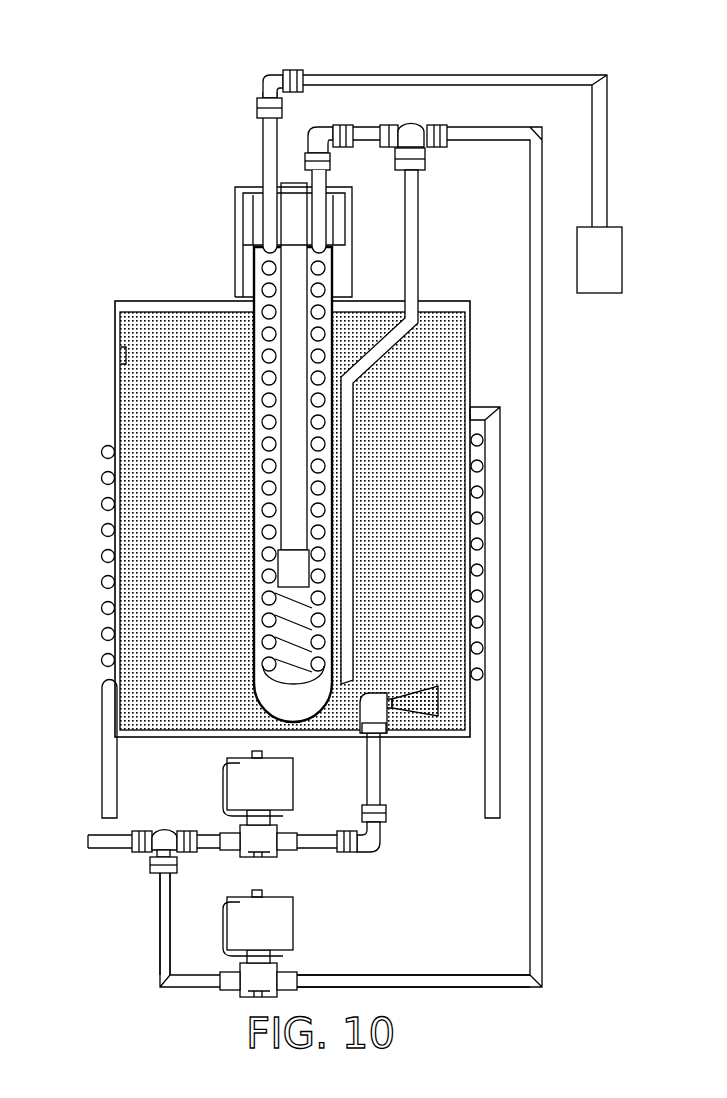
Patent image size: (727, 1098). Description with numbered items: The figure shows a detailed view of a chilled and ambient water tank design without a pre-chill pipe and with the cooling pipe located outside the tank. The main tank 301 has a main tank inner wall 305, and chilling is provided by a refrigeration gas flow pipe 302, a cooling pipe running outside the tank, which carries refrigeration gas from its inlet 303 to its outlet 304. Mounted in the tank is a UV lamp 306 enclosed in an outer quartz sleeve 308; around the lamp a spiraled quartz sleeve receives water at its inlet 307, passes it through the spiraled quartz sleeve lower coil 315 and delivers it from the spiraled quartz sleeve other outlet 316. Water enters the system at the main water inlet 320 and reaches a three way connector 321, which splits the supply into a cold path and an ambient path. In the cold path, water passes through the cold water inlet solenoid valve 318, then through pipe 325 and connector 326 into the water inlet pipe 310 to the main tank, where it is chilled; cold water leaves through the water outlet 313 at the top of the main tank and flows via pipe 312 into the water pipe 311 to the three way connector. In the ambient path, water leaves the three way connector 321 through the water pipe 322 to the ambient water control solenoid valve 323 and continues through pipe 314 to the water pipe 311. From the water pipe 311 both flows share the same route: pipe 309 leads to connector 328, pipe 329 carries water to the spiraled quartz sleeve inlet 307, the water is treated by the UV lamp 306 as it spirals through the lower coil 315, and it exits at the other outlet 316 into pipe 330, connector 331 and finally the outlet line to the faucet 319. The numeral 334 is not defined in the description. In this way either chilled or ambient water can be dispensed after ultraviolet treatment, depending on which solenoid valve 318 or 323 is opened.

The main tank 301 is at (115, 318).
The refrigeration gas flow pipe 302 is at (101, 607).
The inlet of refrigeration gas flow pipe 303 is at (102, 792).
The outlet of refrigeration gas flow pipe 304 is at (485, 804).
The main tank inner wall 305 is at (120, 372).
The UV lamp 306 is at (262, 205).
The spiraled quartz sleeve inlet 307 is at (326, 270).
The outer quartz sleeve 308 is at (252, 333).
The pipe 309 is at (362, 126).
The water inlet pipe to main tank 310 is at (367, 760).
The water pipe to 3 way connector 311 is at (408, 125).
The pipe 312 is at (418, 200).
The water outlet of cold water from the main tank 313 is at (491, 75).
The pipe between ambient water control solenoid valve and 3 way connector 314 is at (437, 975).
The spiraled quartz sleeve lower coil 315 is at (397, 716).
The spiraled quartz sleeve other outlet 316 is at (262, 268).
The cold water inlet solenoid valve 318 is at (286, 797).
The faucet 319 is at (600, 294).
The main water inlet 320 is at (105, 850).
The 3 way connector 321 is at (162, 832).
The water pipe to ambient water control solenoid valve 322 is at (160, 945).
The ambient water control solenoid valve 323 is at (294, 931).
The pipe 325 is at (328, 852).
The connector 326 is at (381, 849).
The connector 328 is at (318, 128).
The pipe 329 is at (320, 202).
The pipe 330 is at (263, 130).
The connector 331 is at (262, 80).
The coupling 334 is at (205, 850).